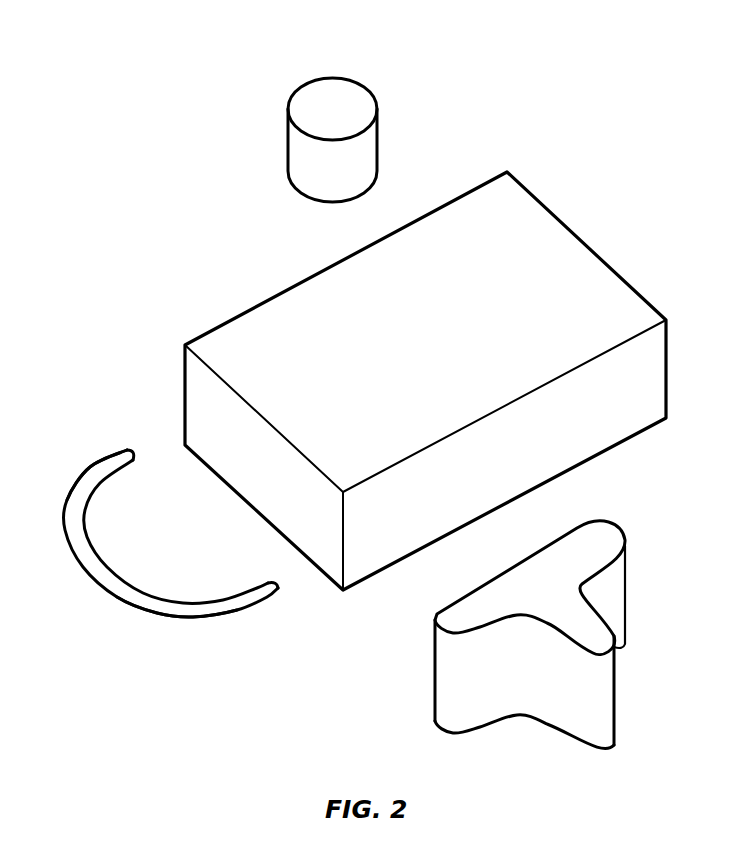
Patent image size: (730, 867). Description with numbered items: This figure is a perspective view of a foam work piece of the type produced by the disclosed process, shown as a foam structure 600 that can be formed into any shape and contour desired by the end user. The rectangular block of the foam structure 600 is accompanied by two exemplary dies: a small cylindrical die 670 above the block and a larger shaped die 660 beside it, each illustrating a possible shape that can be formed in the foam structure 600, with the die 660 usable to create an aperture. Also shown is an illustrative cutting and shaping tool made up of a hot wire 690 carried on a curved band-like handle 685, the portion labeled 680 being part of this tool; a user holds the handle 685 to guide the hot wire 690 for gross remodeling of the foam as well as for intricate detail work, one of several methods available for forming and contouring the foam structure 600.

The foam structure 600 is at (693, 331).
The die 670 is at (347, 105).
The die 660 is at (598, 542).
The handle band 680 is at (282, 594).
The handle 685 is at (222, 608).
The hot wire 690 is at (145, 463).